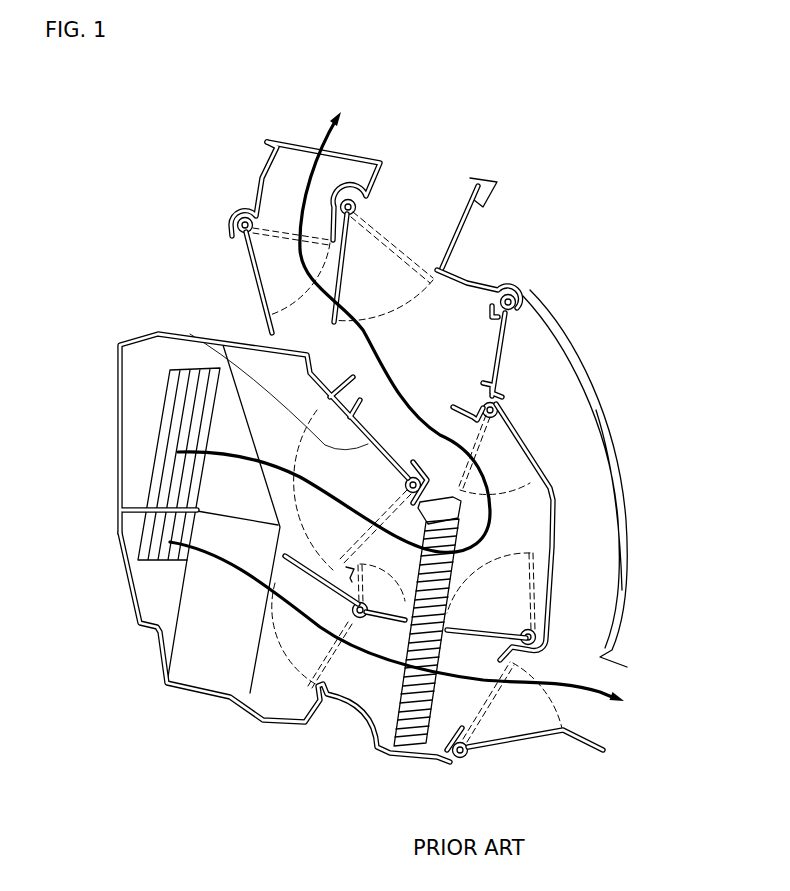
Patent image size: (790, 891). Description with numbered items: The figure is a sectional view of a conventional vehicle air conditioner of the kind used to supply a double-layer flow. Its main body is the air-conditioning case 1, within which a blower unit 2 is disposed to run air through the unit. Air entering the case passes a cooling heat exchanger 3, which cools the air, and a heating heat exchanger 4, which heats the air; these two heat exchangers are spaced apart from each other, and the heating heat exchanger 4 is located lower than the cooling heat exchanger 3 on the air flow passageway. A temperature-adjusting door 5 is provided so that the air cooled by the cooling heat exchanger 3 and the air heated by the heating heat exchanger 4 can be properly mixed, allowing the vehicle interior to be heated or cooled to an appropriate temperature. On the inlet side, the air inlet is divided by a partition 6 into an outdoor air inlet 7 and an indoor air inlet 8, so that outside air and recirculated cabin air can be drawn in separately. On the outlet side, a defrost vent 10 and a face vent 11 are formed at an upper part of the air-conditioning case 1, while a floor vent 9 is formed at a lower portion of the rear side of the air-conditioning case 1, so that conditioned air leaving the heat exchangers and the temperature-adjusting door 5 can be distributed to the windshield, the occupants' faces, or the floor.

The air-conditioning case 1 is at (640, 593).
The blower unit 2 is at (163, 400).
The cooling heat exchanger 3 is at (190, 660).
The heating heat exchanger 4 is at (408, 745).
The temperature-adjusting door 5 is at (190, 334).
The partition 6 is at (130, 500).
The outdoor air inlet 7 is at (143, 428).
The indoor air inlet 8 is at (128, 535).
The floor vent 9 is at (592, 720).
The defrost vent 10 is at (344, 176).
The face vent 11 is at (414, 203).